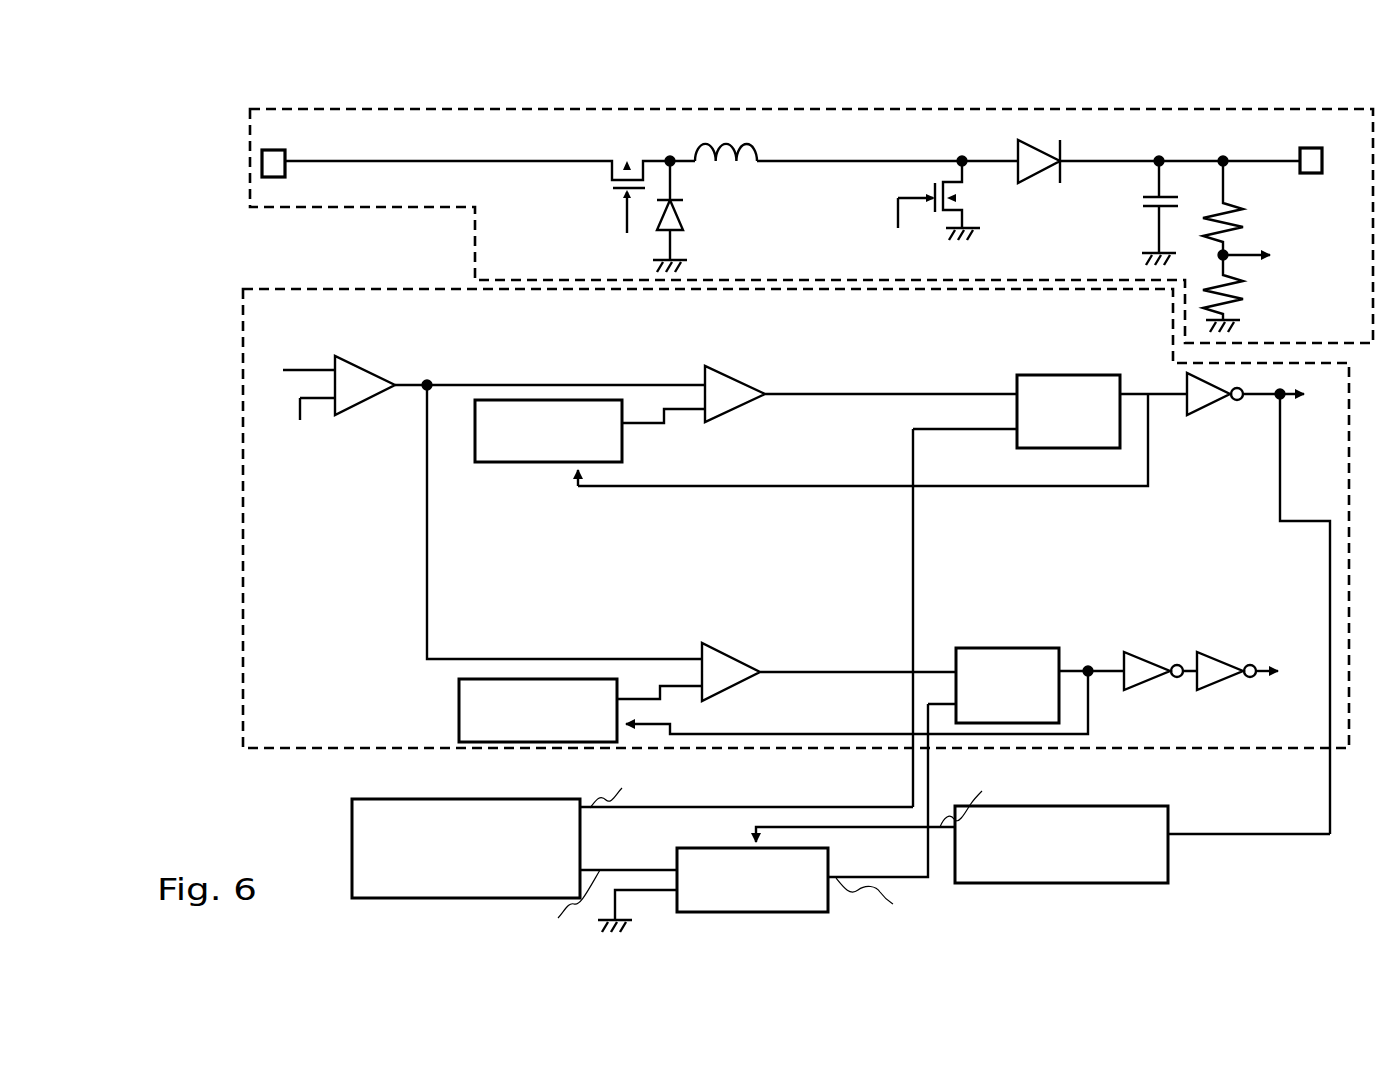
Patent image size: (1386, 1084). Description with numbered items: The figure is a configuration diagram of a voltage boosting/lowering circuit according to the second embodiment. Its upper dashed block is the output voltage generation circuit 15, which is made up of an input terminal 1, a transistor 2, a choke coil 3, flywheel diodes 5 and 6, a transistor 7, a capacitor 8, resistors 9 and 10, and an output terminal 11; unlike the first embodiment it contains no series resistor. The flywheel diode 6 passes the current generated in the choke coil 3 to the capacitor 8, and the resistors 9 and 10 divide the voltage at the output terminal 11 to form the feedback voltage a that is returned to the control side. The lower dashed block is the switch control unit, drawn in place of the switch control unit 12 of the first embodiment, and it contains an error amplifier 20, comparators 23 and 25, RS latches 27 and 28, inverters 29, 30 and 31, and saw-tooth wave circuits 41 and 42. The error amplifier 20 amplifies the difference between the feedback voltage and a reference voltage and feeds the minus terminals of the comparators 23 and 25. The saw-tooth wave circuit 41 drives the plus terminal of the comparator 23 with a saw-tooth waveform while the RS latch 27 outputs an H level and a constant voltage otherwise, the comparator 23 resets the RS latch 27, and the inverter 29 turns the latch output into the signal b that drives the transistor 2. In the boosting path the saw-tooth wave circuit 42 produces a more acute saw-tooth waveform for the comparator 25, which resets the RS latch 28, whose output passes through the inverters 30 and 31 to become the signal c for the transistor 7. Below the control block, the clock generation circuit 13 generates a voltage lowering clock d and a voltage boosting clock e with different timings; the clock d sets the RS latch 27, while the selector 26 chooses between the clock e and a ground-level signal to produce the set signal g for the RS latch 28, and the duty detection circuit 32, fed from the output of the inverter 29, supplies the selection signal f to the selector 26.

The input terminal 1 is at (283, 150).
The transistor 2 is at (612, 178).
The choke coil 3 is at (757, 145).
The flywheel diode 5 is at (683, 205).
The flywheel diode 6 is at (1035, 140).
The transistor 7 is at (962, 206).
The capacitor 8 is at (1143, 197).
The resistor 9 is at (1245, 228).
The resistor 10 is at (1245, 300).
The output terminal 11 is at (1307, 148).
The switch control unit 12 is at (325, 289).
The clock generation circuit 13 is at (352, 864).
The output voltage generation circuit 15 is at (475, 244).
The error amplifier 20 is at (345, 358).
The comparator 23 is at (715, 368).
The comparator 25 is at (714, 645).
The selector 26 is at (677, 855).
The RS latch 27 is at (1050, 375).
The RS latch 28 is at (990, 648).
The inverter 29 is at (1205, 410).
The inverter 30 is at (1138, 656).
The inverter 31 is at (1214, 656).
The duty detection circuit 32 is at (1170, 830).
The saw-tooth wave circuit 41 is at (490, 462).
The saw-tooth wave circuit 42 is at (459, 718).